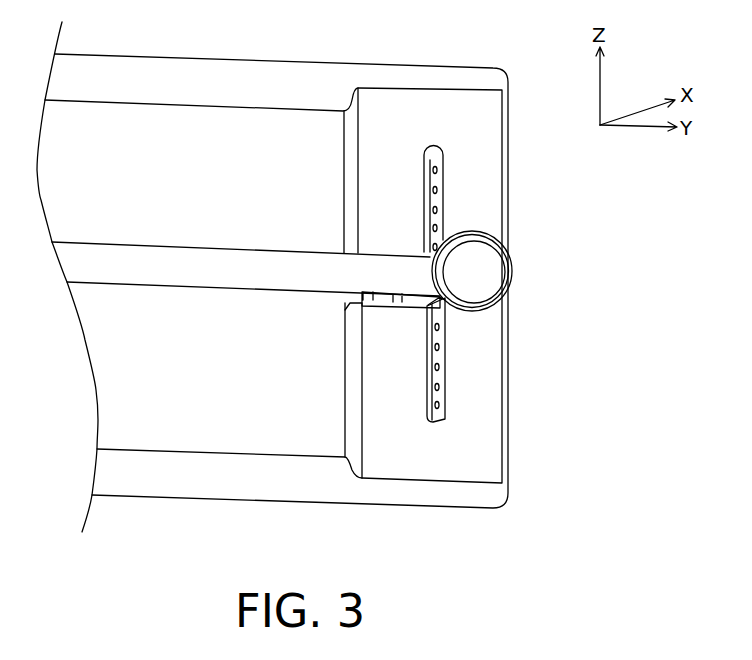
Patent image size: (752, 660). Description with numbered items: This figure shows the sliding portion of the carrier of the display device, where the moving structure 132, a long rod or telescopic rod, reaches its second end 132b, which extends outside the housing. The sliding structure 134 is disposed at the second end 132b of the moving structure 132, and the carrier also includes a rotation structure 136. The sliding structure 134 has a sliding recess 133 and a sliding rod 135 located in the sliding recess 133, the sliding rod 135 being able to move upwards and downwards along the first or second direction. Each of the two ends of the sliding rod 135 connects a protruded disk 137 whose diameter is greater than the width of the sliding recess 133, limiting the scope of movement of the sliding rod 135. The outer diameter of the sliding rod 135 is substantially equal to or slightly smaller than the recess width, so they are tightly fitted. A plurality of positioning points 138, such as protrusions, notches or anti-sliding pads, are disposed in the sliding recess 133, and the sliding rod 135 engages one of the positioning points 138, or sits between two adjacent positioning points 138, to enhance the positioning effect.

The moving structure 132 is at (237, 90).
The second end 132b is at (407, 98).
The sliding recess 133 is at (443, 220).
The sliding structure 134 is at (600, 158).
The sliding rod 135 is at (430, 312).
The rotation structure 136 is at (262, 272).
The protruded disk 137 is at (510, 268).
The positioning points 138 is at (438, 165).